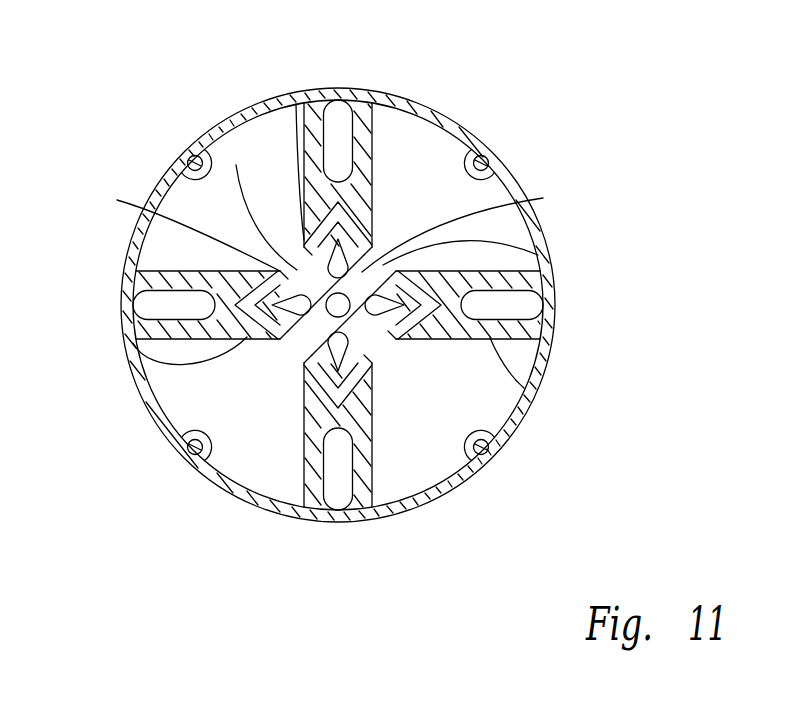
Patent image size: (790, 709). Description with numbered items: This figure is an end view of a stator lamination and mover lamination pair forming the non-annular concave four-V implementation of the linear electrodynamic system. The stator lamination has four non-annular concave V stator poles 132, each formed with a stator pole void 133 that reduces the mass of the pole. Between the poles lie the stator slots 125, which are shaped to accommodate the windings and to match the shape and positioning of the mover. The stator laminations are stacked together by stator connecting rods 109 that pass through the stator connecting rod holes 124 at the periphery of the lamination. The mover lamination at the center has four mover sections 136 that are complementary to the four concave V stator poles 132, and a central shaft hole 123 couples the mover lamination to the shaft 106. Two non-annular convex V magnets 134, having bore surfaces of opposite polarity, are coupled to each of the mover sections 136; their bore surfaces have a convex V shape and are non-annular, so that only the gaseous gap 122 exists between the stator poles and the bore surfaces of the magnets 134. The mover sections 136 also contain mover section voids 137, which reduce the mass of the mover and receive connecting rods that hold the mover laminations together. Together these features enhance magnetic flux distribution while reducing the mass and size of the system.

The shaft 106 is at (372, 270).
The stator connecting rods 109 is at (486, 160).
The gaseous gap 122 is at (418, 266).
The central shaft hole 123 is at (370, 350).
The stator connecting rod holes 124 is at (473, 148).
The stator slots 125 is at (428, 142).
The non-annular concave V stator poles 132 is at (370, 156).
The stator pole voids 133 is at (338, 122).
The non-annular convex V magnets 134 is at (318, 122).
The mover sections 136 is at (477, 200).
The mover section voids 137 is at (375, 262).